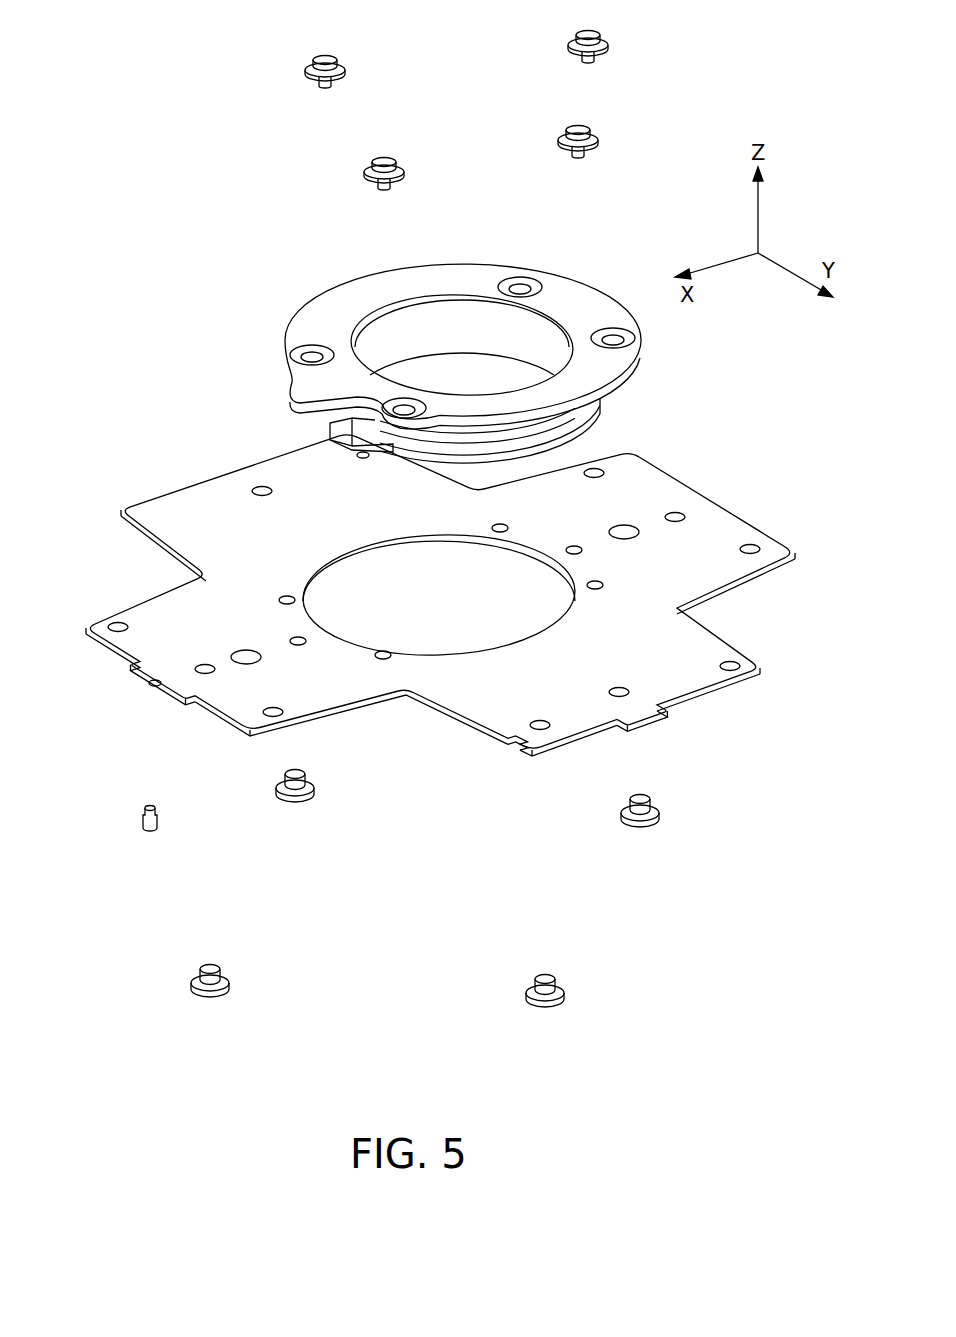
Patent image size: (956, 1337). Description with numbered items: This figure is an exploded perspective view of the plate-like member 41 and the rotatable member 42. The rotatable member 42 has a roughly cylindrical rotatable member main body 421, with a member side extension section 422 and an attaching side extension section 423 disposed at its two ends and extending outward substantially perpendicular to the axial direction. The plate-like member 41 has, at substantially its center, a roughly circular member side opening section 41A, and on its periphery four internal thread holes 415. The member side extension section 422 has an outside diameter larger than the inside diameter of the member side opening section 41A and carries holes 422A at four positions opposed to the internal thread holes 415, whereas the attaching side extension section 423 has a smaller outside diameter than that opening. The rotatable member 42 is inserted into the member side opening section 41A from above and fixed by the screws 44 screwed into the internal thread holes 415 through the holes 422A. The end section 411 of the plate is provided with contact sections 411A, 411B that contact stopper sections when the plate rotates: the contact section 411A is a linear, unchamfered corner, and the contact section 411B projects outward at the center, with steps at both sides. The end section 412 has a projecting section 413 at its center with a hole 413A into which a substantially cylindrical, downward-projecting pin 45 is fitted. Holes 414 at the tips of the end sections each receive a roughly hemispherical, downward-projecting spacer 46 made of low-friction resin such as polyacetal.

The plate-like member 41 is at (660, 615).
The member side opening section 41A is at (406, 546).
The end section 411 is at (692, 686).
The contact section 411A is at (516, 745).
The contact section 411B is at (658, 726).
The end section 412 is at (232, 708).
The projecting section 413 is at (132, 666).
The hole 413A is at (147, 700).
The holes 414 is at (270, 494).
The internal thread holes 415 is at (383, 658).
The rotatable member 42 is at (656, 356).
The rotatable member main body 421 is at (425, 348).
The member side extension section 422 is at (578, 294).
The holes 422A is at (522, 280).
The attaching side extension section 423 is at (598, 421).
The screws 44 is at (346, 72).
The pin 45 is at (160, 822).
The spacer 46 is at (316, 793).